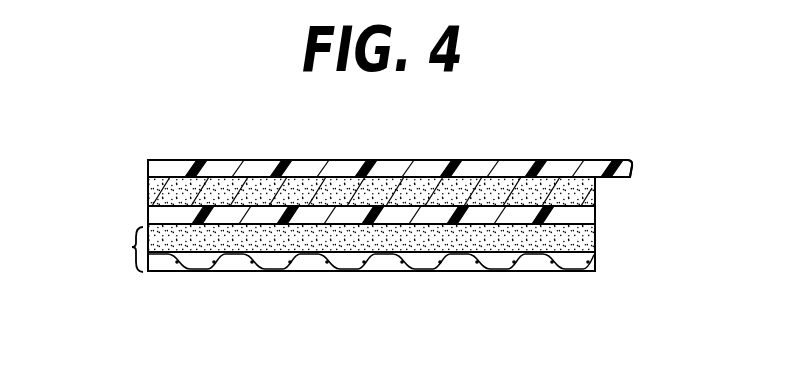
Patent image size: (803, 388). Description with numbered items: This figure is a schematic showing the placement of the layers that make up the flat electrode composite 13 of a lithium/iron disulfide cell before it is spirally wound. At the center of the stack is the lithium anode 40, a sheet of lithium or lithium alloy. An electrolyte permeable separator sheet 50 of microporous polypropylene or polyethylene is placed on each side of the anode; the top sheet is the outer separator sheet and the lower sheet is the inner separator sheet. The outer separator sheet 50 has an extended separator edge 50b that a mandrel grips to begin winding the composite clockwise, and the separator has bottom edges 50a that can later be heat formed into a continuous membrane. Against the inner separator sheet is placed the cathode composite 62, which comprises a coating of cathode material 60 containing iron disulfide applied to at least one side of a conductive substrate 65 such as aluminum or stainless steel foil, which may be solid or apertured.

The flat electrode composite 13 is at (172, 136).
The separator sheet 50 is at (563, 168).
The bottom edges of separator 50a is at (147, 217).
The extended separator edge 50b is at (632, 165).
The lithium anode 40 is at (592, 195).
The cathode material 60 is at (590, 242).
The substrate 65 is at (522, 263).
The cathode composite 62 is at (132, 247).